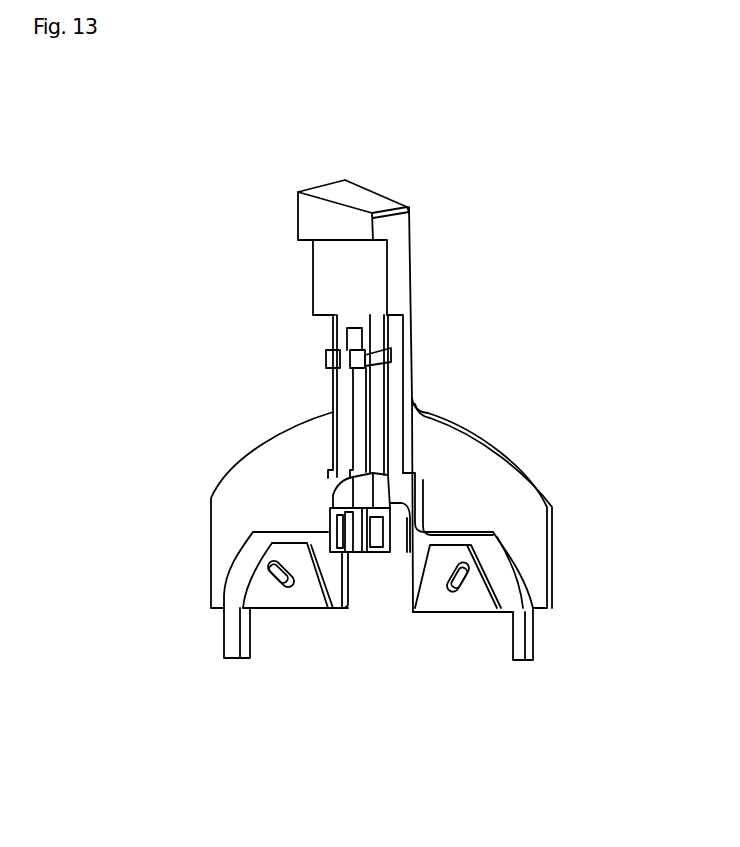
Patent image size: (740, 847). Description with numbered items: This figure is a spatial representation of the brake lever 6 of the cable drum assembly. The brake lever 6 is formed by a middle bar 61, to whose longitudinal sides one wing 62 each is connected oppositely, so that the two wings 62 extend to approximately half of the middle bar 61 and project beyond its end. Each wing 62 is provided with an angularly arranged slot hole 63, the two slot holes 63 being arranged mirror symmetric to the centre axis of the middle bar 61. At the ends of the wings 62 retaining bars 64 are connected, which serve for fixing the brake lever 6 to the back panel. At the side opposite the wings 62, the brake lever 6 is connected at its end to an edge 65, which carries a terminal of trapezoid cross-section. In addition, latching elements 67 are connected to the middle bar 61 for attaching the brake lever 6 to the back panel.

The brake lever 6 is at (485, 130).
The middle bar 61 is at (403, 297).
The wing 62 is at (487, 490).
The slot hole 63 is at (447, 592).
The retaining bar 64 is at (537, 655).
The edge 65 is at (313, 222).
The latching element 67 is at (365, 352).